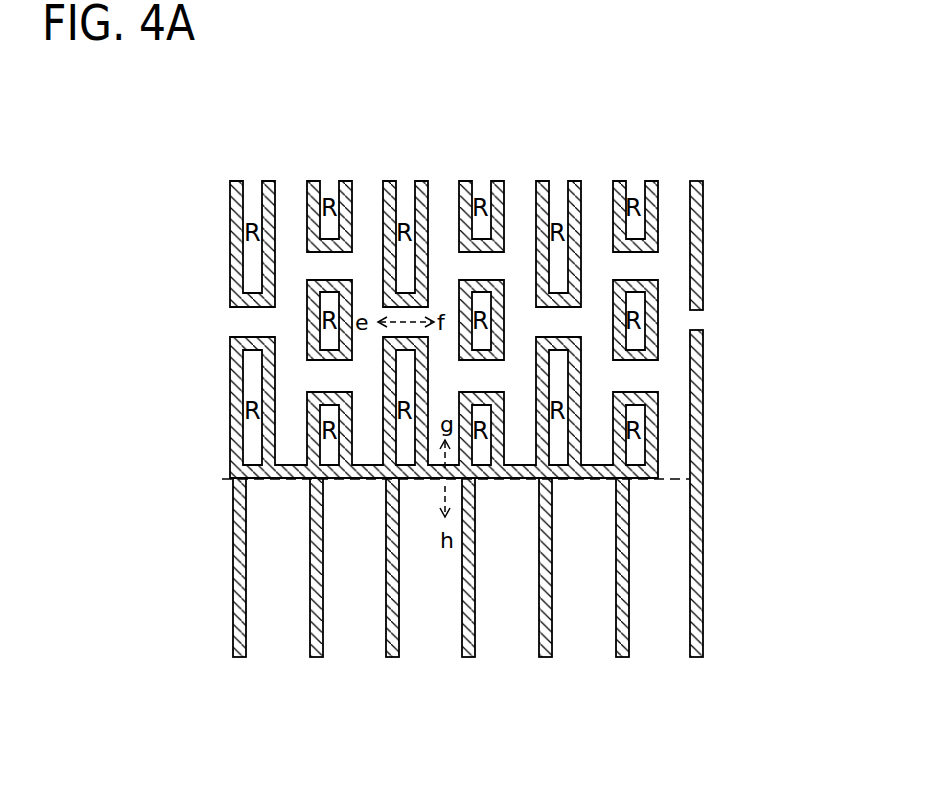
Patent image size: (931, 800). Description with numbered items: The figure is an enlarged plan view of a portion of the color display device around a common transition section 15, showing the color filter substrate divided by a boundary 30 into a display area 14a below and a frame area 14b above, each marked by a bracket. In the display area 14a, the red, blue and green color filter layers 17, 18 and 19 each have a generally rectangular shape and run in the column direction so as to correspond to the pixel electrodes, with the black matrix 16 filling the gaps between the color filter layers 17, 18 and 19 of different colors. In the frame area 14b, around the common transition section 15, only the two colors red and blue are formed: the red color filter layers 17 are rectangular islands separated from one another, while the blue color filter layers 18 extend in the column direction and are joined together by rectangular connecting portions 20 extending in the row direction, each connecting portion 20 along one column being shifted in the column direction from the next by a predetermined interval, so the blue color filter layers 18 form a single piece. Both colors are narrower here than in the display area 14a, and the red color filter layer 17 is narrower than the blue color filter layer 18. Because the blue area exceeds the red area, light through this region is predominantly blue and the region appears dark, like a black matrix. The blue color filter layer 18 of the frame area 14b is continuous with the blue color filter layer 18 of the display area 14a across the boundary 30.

The display area 14a is at (213, 478).
The frame area 14b is at (213, 181).
The common transition section 15 is at (291, 162).
The black matrix 16 is at (493, 180).
The red color filter layer 17 is at (557, 180).
The blue color filter layer 18 is at (670, 180).
The green color filter layer 19 is at (583, 655).
The connecting portion 20 is at (565, 318).
The boundary 30 is at (677, 478).